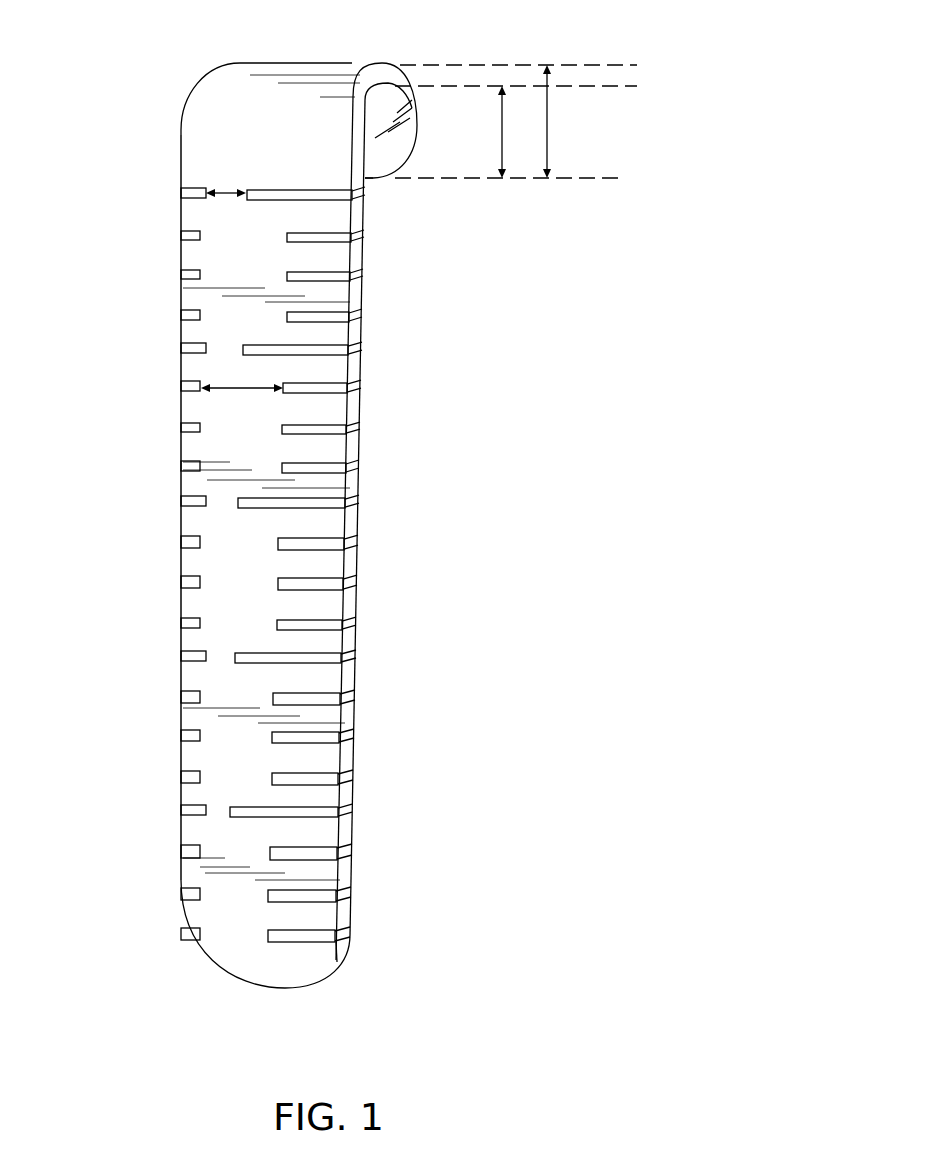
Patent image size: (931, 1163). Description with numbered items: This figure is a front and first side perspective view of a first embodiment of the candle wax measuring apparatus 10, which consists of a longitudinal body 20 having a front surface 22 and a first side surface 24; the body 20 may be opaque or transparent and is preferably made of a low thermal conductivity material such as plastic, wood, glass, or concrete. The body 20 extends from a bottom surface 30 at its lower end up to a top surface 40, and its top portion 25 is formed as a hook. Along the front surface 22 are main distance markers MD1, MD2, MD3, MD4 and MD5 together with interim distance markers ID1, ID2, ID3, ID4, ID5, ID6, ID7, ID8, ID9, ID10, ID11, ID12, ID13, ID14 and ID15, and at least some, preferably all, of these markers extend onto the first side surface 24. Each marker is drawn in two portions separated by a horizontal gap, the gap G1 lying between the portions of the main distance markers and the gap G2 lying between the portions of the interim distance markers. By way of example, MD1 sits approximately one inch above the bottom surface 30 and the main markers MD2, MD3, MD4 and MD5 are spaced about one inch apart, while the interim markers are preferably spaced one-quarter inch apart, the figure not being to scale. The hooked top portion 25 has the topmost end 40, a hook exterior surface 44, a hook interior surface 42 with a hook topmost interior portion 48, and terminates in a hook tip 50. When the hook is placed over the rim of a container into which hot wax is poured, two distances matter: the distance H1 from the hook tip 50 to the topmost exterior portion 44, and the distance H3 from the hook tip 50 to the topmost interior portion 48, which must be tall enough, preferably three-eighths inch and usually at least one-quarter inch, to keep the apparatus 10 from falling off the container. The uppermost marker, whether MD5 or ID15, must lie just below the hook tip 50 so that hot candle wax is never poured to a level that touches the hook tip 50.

The candle wax measuring apparatus 10 is at (94, 445).
The longitudinal body 20 is at (120, 414).
The front surface 22 is at (188, 586).
The first side surface 24 is at (358, 517).
The top portion 25 is at (406, 122).
The bottom surface 30 is at (248, 988).
The top surface 40 is at (295, 63).
The hook interior surface 42 is at (395, 123).
The hook exterior surface 44 is at (393, 72).
The hook topmost interior portion 48 is at (385, 87).
The hook tip 50 is at (388, 174).
The gap between portions of main distance markers G1 is at (228, 180).
The gap between portions of interim distance markers G2 is at (242, 379).
The distance from hook tip to topmost exterior portion H1 is at (516, 121).
The distance from hook tip to topmost interior portion H3 is at (516, 132).
The interim distance marker ID1 is at (352, 936).
The interim distance marker ID2 is at (353, 896).
The interim distance marker ID3 is at (354, 854).
The interim distance marker ID4 is at (355, 779).
The interim distance marker ID5 is at (356, 738).
The interim distance marker ID6 is at (357, 699).
The interim distance marker ID7 is at (358, 625).
The interim distance marker ID8 is at (359, 584).
The interim distance marker ID9 is at (360, 544).
The interim distance marker ID10 is at (361, 468).
The interim distance marker ID11 is at (362, 430).
The interim distance marker ID12 is at (363, 388).
The interim distance marker ID13 is at (287, 314).
The interim distance marker ID14 is at (287, 274).
The interim distance marker ID15 is at (287, 235).
The main distance marker MD1 is at (232, 809).
The main distance marker MD2 is at (237, 655).
The main distance marker MD3 is at (240, 500).
The main distance marker MD4 is at (245, 347).
The main distance marker MD5 is at (252, 194).